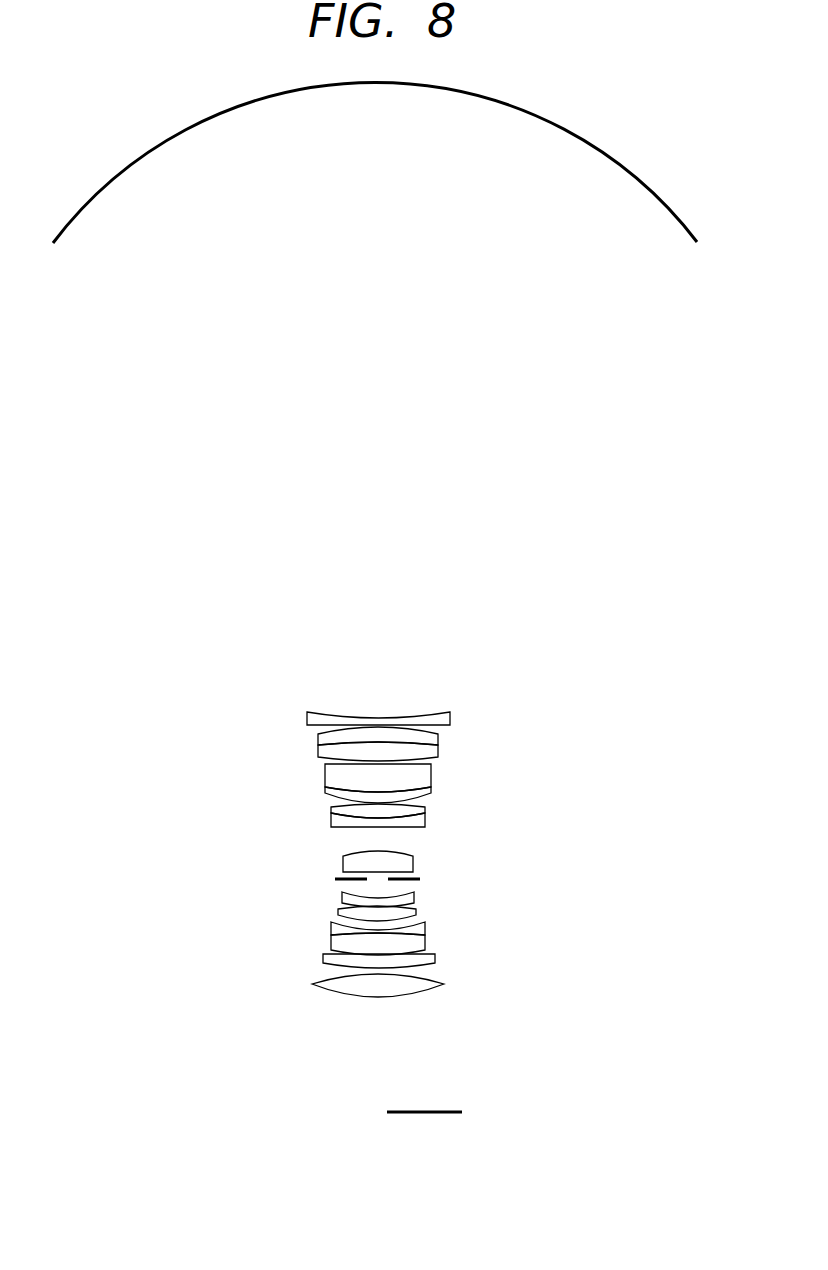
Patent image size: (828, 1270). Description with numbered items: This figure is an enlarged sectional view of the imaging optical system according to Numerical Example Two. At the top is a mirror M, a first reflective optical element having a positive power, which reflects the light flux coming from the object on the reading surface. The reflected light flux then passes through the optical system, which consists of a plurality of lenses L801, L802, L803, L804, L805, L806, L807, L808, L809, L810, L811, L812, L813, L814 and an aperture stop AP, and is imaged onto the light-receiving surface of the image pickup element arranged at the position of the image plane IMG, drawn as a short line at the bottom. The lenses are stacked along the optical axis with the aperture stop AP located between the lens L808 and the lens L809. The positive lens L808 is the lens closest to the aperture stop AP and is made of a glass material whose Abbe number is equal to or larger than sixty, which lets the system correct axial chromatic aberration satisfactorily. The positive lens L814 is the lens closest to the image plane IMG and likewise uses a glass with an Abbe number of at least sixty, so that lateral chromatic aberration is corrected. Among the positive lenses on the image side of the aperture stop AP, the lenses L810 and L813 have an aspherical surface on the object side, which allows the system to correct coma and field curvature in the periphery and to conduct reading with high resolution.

The mirror M is at (120, 178).
The lens L801 is at (312, 719).
The lens L802 is at (318, 740).
The lens L803 is at (318, 757).
The lens L804 is at (327, 777).
The lens L805 is at (330, 792).
The lens L806 is at (423, 810).
The lens L807 is at (423, 821).
The positive lens L808 is at (410, 862).
The aperture stop AP is at (413, 880).
The lens L809 is at (342, 900).
The lens L810 is at (338, 912).
The lens L811 is at (332, 930).
The lens L812 is at (332, 943).
The lens L813 is at (325, 962).
The positive lens L814 is at (323, 992).
The image plane IMG is at (445, 1112).